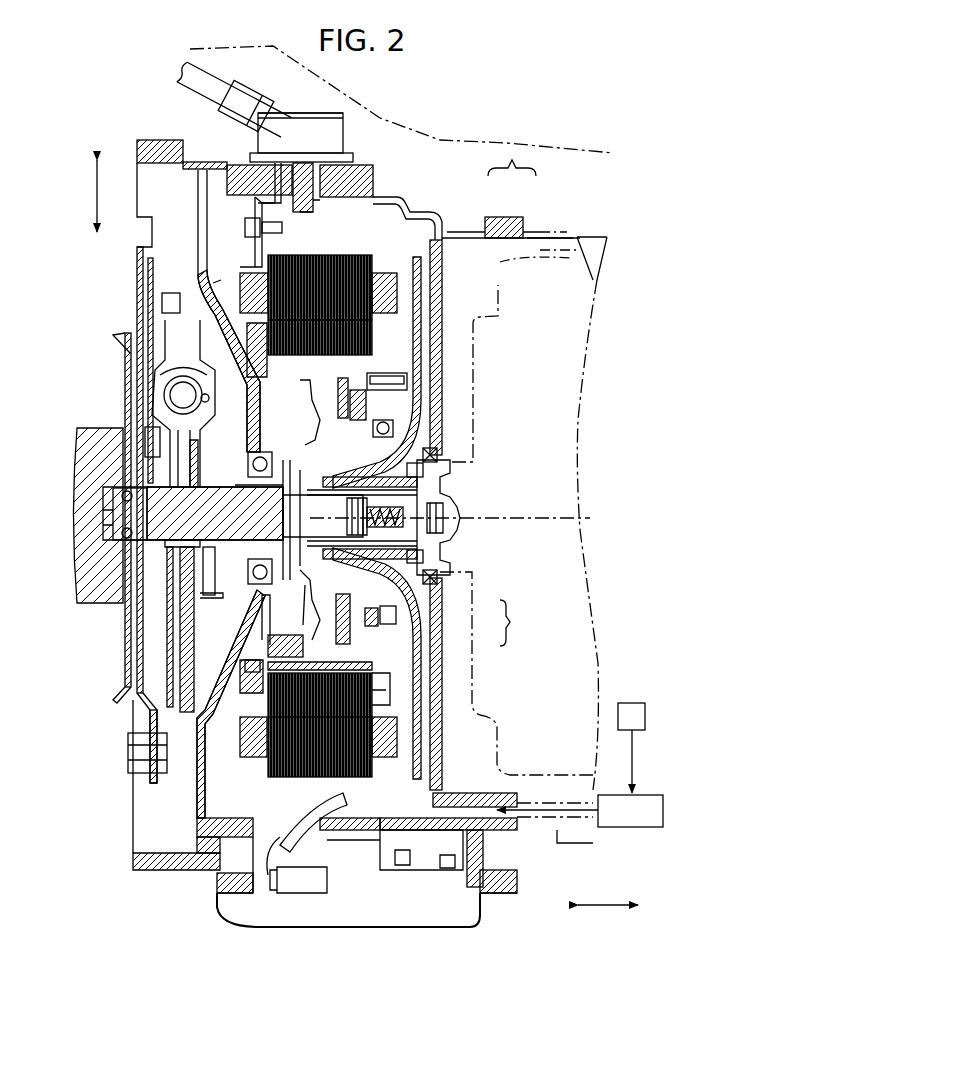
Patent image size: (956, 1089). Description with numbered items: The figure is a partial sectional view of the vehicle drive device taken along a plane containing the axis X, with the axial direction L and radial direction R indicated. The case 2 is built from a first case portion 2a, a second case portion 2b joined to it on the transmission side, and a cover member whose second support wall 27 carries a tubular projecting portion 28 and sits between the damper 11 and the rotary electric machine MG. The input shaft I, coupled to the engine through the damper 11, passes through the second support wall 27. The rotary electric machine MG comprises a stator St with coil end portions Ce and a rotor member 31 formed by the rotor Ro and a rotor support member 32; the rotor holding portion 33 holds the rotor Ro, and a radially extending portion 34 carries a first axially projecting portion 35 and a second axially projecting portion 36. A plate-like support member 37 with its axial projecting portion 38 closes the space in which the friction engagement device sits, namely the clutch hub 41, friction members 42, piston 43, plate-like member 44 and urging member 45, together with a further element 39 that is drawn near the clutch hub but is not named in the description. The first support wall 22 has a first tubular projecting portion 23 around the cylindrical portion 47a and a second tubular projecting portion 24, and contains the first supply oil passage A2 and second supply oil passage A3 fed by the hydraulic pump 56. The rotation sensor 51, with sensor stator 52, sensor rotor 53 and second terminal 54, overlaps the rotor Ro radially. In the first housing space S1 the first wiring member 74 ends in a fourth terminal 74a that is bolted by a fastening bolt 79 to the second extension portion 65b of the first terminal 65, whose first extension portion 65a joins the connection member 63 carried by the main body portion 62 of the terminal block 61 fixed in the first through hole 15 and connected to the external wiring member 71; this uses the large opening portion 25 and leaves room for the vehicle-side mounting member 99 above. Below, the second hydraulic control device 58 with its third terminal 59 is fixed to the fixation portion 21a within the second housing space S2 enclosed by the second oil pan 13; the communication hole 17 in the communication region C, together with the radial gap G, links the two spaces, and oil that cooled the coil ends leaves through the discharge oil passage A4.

The axis X is at (460, 519).
The radial direction R is at (95, 190).
The axial direction L is at (608, 899).
The vehicle-side mounting member 99 is at (562, 143).
The first external wiring member 71 is at (185, 92).
The terminal block 61 is at (350, 140).
The main body portion 62 is at (325, 112).
The first terminal 65 is at (258, 198).
The first extension portion 65a is at (277, 190).
The connection member 63 is at (305, 185).
The first through hole 15 is at (318, 190).
The rotary electric machine MG is at (388, 215).
The first wiring member 74 is at (258, 262).
The fourth terminal 74a is at (254, 222).
The fastening bolt 79 is at (244, 228).
The opening portion 25 is at (232, 240).
The second extension portion 65b is at (262, 210).
The stator St is at (330, 270).
The coil end portion Ce is at (405, 298).
The rotor Ro is at (268, 335).
The second support wall 27 is at (222, 330).
The first support wall 22 is at (447, 302).
The second supply oil passage A3 is at (443, 285).
The rotor member 31 is at (392, 345).
The rotor support member 32 is at (395, 370).
The second terminal 54 is at (408, 385).
The radially extending portion 34 is at (395, 428).
The urging member 45 is at (345, 395).
The second axially projecting portion 36 is at (312, 433).
The case 2 is at (507, 192).
The first case portion 2a is at (450, 222).
The second case portion 2b is at (567, 230).
The damper 11 is at (160, 348).
The rotor holding portion 33 is at (226, 385).
The plate-like support member 37 is at (248, 372).
The cylindrical portion 47a is at (300, 505).
The first axially projecting portion 35 is at (355, 480).
The first tubular projecting portion 23 is at (372, 527).
The tubular projecting portion 28 is at (248, 455).
The axial projecting portion 38 is at (248, 470).
The input shaft I is at (216, 548).
The clutch hub 41 is at (268, 622).
The friction members 42 is at (268, 645).
The ring 39 is at (245, 667).
The plate-like member 44 is at (305, 585).
The piston 43 is at (310, 650).
The first housing space S1 is at (243, 712).
The second tubular projecting portion 24 is at (372, 688).
The sensor rotor 53 is at (400, 608).
The sensor stator 52 is at (380, 630).
The rotation sensor 51 is at (519, 623).
The first supply oil passage A2 is at (432, 742).
The hydraulic pump 56 is at (632, 748).
The fixation portion 21a is at (372, 835).
The discharge oil passage A4 is at (385, 787).
The second oil pan 13 is at (252, 912).
The second housing space S2 is at (455, 912).
The radial gap G is at (225, 808).
The communication hole 17 is at (250, 838).
The communication region C is at (298, 812).
The third terminal 59 is at (300, 880).
The second hydraulic control device 58 is at (380, 903).